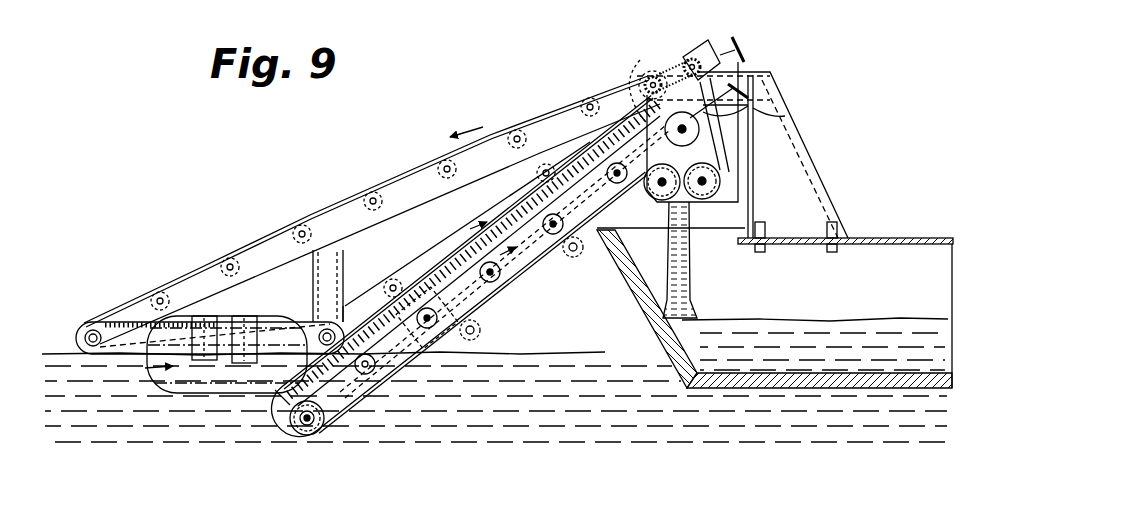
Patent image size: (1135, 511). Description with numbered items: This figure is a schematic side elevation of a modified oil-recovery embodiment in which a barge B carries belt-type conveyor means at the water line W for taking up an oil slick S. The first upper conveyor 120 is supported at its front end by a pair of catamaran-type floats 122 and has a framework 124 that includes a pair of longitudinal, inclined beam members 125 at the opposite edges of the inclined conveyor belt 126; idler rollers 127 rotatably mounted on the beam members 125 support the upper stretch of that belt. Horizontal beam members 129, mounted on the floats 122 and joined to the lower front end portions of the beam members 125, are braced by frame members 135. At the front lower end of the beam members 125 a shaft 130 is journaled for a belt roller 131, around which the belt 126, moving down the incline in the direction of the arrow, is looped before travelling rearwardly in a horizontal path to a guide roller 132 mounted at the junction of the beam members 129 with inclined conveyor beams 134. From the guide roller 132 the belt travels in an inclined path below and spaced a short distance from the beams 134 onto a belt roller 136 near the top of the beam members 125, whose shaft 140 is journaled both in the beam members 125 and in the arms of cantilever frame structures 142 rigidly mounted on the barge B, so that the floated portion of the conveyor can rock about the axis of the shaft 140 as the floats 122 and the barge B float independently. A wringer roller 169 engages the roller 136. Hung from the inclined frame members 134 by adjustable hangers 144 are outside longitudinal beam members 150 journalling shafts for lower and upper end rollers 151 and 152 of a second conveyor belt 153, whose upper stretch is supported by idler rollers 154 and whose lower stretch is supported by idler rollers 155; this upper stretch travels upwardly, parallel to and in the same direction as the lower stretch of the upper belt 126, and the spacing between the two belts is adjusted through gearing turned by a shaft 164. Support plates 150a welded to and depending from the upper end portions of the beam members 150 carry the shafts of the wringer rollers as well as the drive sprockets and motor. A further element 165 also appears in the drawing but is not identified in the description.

The first upper conveyor 120 is at (285, 203).
The catamaran-type floats 122 is at (186, 394).
The framework 124 is at (333, 226).
The longitudinal inclined beam members 125 is at (560, 116).
The inclined conveyor belt 126 is at (513, 98).
The idler rollers 127 is at (151, 291).
The horizontal beam members 129 is at (212, 311).
The shaft 130 is at (92, 328).
The belt roller 131 is at (104, 318).
The guide roller 132 is at (362, 328).
The inclined conveyor beams 134 is at (434, 242).
The frame members 135 is at (312, 280).
The belt roller 136 is at (650, 70).
The shaft 140 is at (652, 72).
The cantilever frame structures 142 is at (793, 148).
The adjustable hangers 144 is at (374, 342).
The outside longitudinal beam members 150 is at (353, 394).
The support plates 150a is at (727, 208).
The lower end roller 151 is at (308, 432).
The upper end roller 152 is at (748, 158).
The conveyor belt 153 is at (293, 407).
The idler rollers 154 is at (378, 382).
The idler rollers 155 is at (567, 258).
The shaft 164 is at (742, 113).
The side plate 165 is at (768, 71).
The wringer roller 169 is at (688, 43).
The oil slick S is at (50, 349).
The water line W is at (590, 349).
The barge B is at (808, 380).